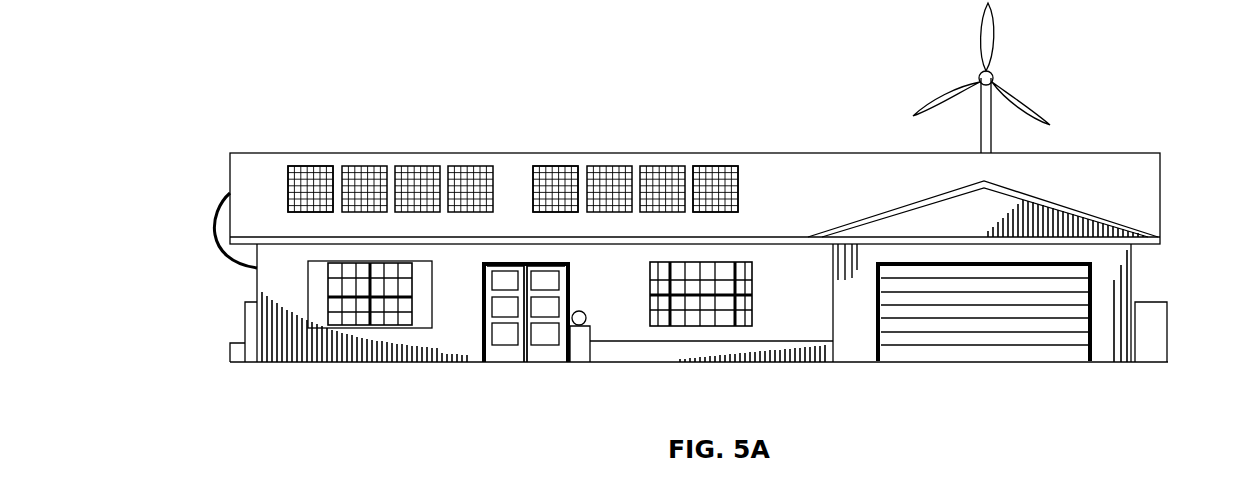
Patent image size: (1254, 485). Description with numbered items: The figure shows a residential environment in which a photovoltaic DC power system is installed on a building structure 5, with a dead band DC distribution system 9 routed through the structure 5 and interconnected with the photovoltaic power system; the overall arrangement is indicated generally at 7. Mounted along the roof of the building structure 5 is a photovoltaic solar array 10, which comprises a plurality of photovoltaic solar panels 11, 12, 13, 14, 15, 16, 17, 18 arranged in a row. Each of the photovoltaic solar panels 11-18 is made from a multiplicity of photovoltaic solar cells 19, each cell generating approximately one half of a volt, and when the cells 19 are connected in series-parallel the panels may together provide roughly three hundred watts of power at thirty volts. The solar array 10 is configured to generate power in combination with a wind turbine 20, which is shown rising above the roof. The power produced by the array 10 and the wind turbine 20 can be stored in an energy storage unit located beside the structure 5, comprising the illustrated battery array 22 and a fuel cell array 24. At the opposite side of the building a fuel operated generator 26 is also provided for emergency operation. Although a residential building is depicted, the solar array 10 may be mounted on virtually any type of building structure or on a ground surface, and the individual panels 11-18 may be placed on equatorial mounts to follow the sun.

The building structure 5 is at (257, 278).
The energy system 7 is at (186, 273).
The dead band DC distribution system 9 is at (215, 213).
The photovoltaic solar array 10 is at (272, 140).
The photovoltaic solar panel 11 is at (317, 178).
The photovoltaic solar panel 12 is at (372, 180).
The photovoltaic solar panel 13 is at (426, 178).
The photovoltaic solar panel 14 is at (474, 180).
The photovoltaic solar panel 15 is at (558, 178).
The photovoltaic solar panel 16 is at (612, 180).
The photovoltaic solar panel 17 is at (664, 178).
The photovoltaic solar panel 18 is at (713, 180).
The photovoltaic solar cell 19 is at (302, 192).
The wind turbine 20 is at (995, 76).
The battery array 22 is at (232, 354).
The fuel cell array 24 is at (250, 323).
The fuel operated generator 26 is at (1150, 324).